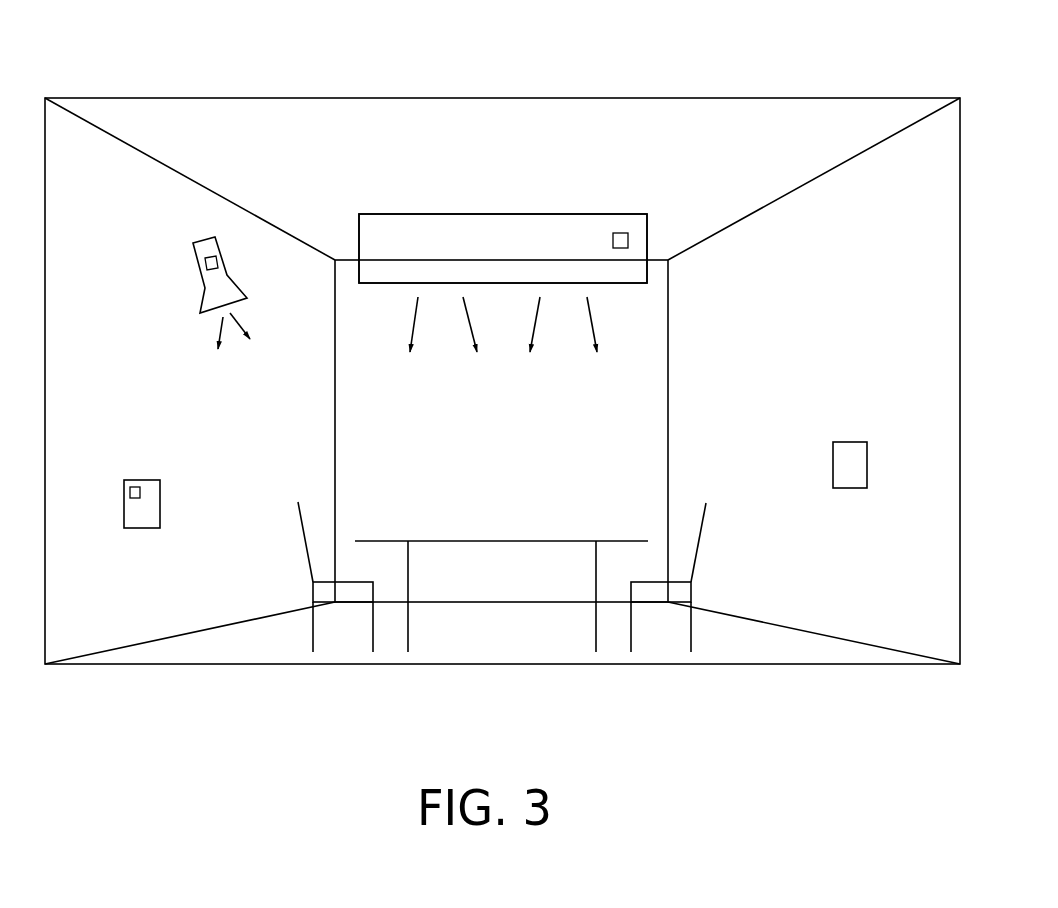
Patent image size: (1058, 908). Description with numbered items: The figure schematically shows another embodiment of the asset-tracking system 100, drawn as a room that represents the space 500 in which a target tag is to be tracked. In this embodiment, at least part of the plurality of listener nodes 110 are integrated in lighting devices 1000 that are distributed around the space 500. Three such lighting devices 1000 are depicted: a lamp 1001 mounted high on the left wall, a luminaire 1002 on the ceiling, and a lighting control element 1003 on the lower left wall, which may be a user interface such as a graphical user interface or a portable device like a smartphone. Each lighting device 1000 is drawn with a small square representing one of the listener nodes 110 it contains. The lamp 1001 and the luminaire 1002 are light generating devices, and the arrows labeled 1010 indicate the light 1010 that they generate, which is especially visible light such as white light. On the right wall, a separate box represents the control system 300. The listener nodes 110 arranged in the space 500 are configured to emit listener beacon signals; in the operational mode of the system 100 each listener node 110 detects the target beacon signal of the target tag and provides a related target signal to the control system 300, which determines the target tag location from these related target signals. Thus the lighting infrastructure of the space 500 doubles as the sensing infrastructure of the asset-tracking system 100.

The asset-tracking system 100 is at (692, 96).
The space 500 is at (513, 165).
The listener node 110 is at (622, 231).
The lighting device 1000 is at (452, 331).
The lamp 1001 is at (195, 233).
The luminaire 1002 is at (657, 267).
The lighting control element 1003 is at (182, 505).
The light 1010 is at (222, 327).
The control system 300 is at (879, 447).